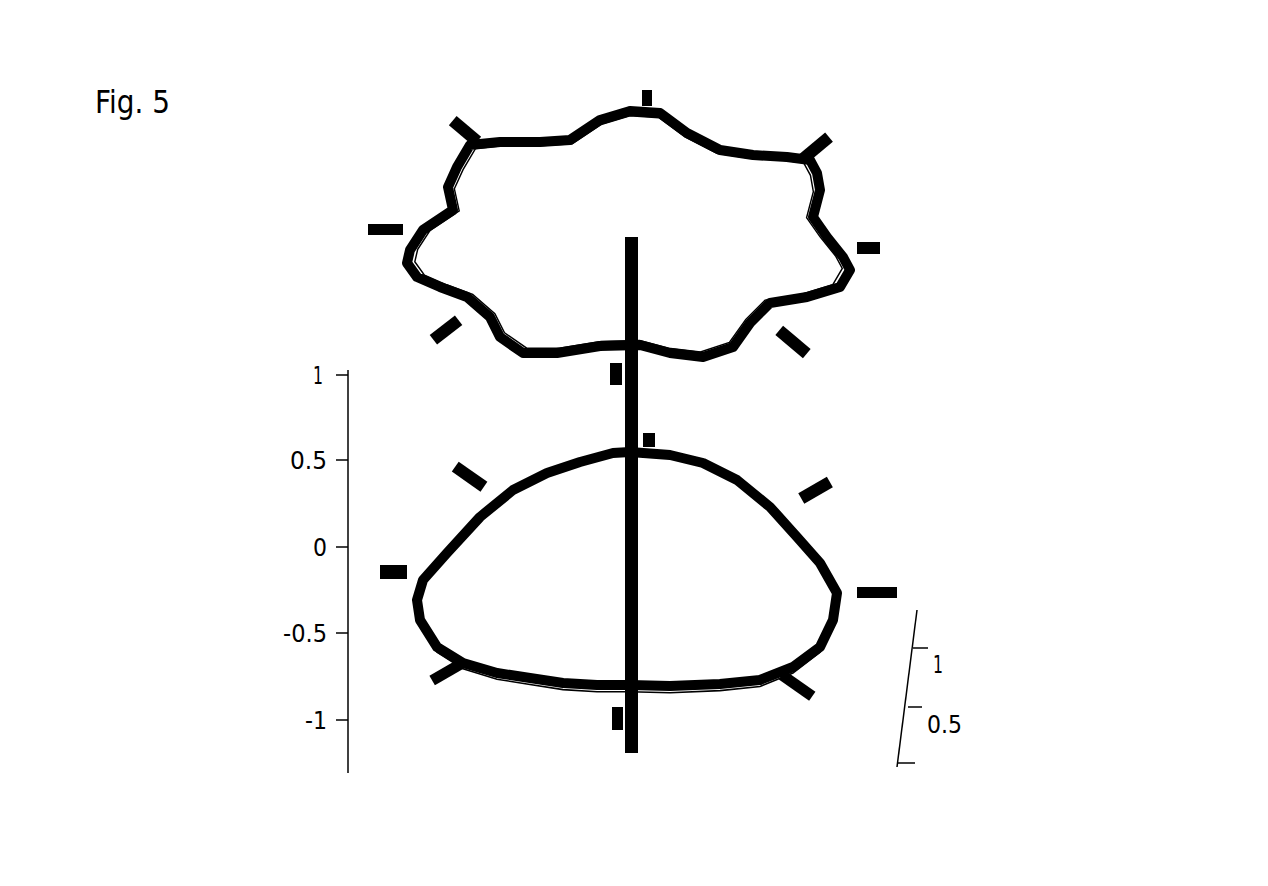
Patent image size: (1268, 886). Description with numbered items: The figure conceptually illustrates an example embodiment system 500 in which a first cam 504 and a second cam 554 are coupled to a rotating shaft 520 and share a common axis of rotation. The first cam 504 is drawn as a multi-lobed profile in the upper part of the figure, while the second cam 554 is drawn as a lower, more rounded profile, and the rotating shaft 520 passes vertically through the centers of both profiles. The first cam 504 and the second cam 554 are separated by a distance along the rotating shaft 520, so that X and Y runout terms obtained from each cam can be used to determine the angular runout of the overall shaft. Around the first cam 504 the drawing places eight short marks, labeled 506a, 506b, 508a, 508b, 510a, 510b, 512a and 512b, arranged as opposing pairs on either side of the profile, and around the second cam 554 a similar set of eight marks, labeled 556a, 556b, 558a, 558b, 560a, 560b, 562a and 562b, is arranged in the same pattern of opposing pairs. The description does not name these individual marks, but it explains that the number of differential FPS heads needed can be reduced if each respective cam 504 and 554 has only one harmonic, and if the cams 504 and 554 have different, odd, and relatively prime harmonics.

The system 500 is at (671, 420).
The first cam 504 is at (447, 165).
The sensor marker 506a is at (453, 127).
The sensor marker 506b is at (810, 357).
The sensor marker 508a is at (654, 96).
The sensor marker 508b is at (606, 382).
The sensor marker 510a is at (830, 138).
The sensor marker 510b is at (440, 323).
The sensor marker 512a is at (883, 258).
The sensor marker 512b is at (364, 228).
The rotating shaft 520 is at (645, 393).
The second cam 554 is at (512, 687).
The sensor marker 556a is at (450, 467).
The sensor marker 556b is at (787, 697).
The sensor marker 558a is at (667, 442).
The sensor marker 558b is at (608, 722).
The sensor marker 560a is at (833, 480).
The sensor marker 560b is at (437, 687).
The sensor marker 562a is at (882, 576).
The sensor marker 562b is at (417, 548).